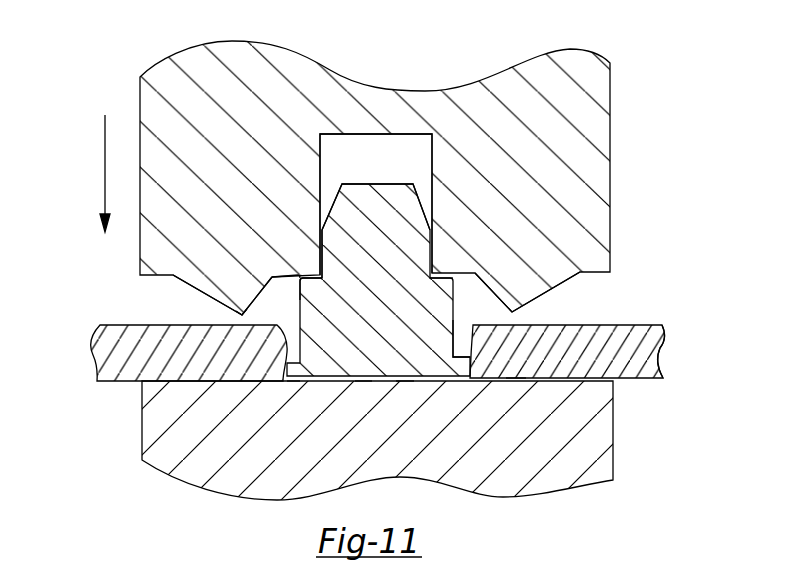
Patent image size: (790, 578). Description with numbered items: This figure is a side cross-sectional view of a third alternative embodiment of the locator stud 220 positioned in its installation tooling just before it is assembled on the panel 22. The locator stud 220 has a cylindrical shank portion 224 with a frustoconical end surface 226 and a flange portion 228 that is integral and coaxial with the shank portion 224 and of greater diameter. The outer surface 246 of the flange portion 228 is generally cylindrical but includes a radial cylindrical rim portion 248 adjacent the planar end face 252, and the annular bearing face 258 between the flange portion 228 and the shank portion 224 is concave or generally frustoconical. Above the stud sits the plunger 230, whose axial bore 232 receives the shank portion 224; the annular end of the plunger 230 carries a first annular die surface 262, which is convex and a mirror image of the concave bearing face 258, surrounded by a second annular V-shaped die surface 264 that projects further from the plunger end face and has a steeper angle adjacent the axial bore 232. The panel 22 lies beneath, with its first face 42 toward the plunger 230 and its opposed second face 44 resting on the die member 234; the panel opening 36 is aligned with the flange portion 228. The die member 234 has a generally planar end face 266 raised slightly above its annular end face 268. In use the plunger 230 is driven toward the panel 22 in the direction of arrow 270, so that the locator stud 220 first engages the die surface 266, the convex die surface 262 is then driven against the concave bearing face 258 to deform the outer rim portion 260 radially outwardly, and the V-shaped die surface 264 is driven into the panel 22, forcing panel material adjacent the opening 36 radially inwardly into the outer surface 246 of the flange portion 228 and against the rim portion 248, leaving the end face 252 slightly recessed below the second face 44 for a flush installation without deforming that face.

The panel 22 is at (100, 353).
The panel opening 36 is at (452, 350).
The first face of the panel 42 is at (623, 325).
The second face of the panel 44 is at (637, 380).
The locator stud 220 is at (451, 222).
The shank portion 224 is at (322, 237).
The frustoconical end surface 226 is at (420, 200).
The flange portion 228 is at (298, 320).
The plunger 230 is at (593, 112).
The axial bore 232 is at (320, 172).
The die member 234 is at (194, 447).
The outer surface of the flange portion 246 is at (453, 308).
The radial cylindrical rim portion 248 is at (293, 382).
The planar end face 252 is at (363, 382).
The annular bearing face 258 is at (438, 273).
The outer rim portion 260 is at (288, 273).
The first annular die surface 262 is at (302, 282).
The second annular V-shaped die surface 264 is at (242, 315).
The planar end face of the die member 266 is at (405, 381).
The annular end face of the die member 268 is at (509, 379).
The arrow 270 is at (80, 173).